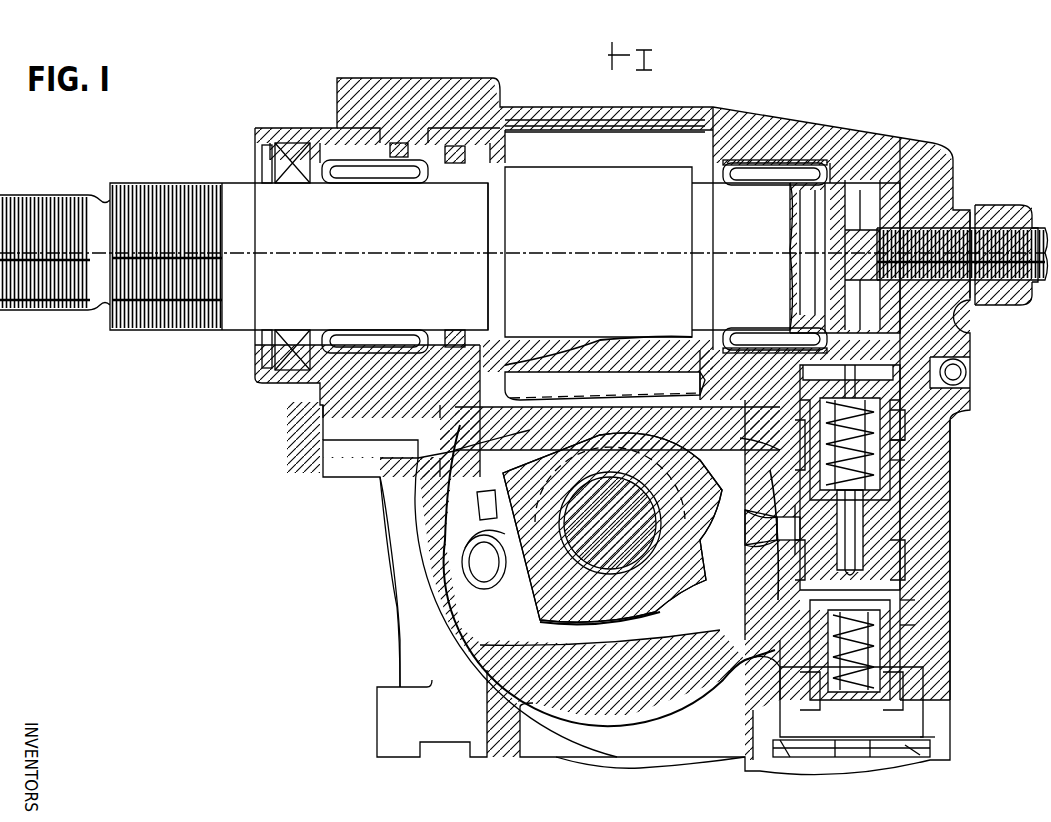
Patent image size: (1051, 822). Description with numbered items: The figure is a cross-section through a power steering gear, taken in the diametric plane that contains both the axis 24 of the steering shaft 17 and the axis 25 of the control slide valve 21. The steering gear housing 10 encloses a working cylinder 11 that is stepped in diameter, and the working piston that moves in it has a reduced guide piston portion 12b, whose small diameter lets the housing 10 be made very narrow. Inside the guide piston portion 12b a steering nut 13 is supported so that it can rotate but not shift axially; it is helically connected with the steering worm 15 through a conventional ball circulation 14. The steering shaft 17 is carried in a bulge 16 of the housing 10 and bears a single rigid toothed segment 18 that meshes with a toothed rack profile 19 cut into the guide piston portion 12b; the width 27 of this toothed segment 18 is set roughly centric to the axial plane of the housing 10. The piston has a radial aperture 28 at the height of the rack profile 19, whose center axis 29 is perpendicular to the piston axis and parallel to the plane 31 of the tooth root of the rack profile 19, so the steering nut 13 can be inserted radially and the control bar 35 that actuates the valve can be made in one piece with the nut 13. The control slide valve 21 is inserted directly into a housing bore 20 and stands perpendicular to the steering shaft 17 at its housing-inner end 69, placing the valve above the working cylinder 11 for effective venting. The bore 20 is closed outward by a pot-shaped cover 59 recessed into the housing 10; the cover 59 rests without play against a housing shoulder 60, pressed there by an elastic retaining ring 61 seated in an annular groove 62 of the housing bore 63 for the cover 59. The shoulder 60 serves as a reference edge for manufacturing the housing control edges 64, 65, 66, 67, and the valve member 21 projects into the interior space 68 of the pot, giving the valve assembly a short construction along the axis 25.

The steering gear housing 10 is at (820, 118).
The working cylinder 11 is at (665, 725).
The guide piston portion 12b is at (580, 680).
The steering nut 13 is at (655, 463).
The ball circulation 14 is at (500, 600).
The steering worm 15 is at (660, 568).
The bulge 16 is at (678, 118).
The steering shaft 17 is at (728, 165).
The toothed segment 18 is at (525, 362).
The toothed rack profile 19 is at (700, 392).
The housing bore 20 is at (930, 370).
The control slide valve 21 is at (905, 520).
The axis of the steering shaft 24 is at (357, 250).
The axis of the control slide valve 25 is at (905, 560).
The width of the toothed segment 27 is at (620, 345).
The radial aperture 28 is at (475, 513).
The center axis of the aperture 29 is at (455, 578).
The plane of the tooth root 31 is at (478, 440).
The control bar 35 is at (773, 520).
The cover 59 is at (820, 757).
The housing shoulder 60 is at (790, 615).
The elastic retaining ring 61 is at (790, 760).
The annular groove 62 is at (930, 745).
The housing bore for the cover 63 is at (780, 705).
The housing control edge 64 is at (915, 625).
The housing control edge 65 is at (915, 600).
The housing control edge 66 is at (905, 465).
The housing control edge 67 is at (905, 440).
The interior space of the pot 68 is at (905, 757).
The housing-inner end of the steering shaft 69 is at (880, 185).